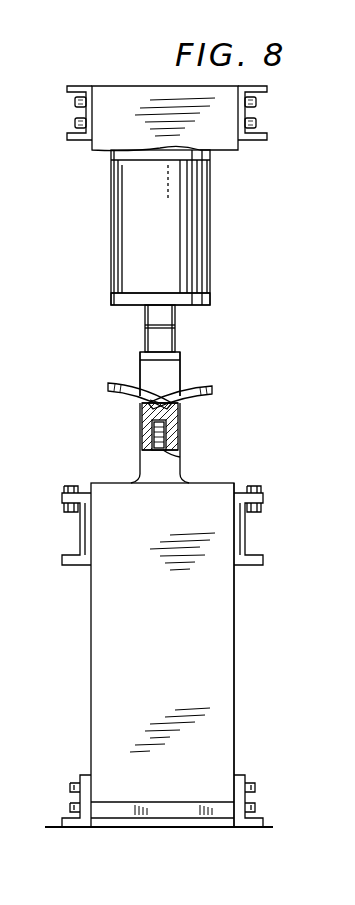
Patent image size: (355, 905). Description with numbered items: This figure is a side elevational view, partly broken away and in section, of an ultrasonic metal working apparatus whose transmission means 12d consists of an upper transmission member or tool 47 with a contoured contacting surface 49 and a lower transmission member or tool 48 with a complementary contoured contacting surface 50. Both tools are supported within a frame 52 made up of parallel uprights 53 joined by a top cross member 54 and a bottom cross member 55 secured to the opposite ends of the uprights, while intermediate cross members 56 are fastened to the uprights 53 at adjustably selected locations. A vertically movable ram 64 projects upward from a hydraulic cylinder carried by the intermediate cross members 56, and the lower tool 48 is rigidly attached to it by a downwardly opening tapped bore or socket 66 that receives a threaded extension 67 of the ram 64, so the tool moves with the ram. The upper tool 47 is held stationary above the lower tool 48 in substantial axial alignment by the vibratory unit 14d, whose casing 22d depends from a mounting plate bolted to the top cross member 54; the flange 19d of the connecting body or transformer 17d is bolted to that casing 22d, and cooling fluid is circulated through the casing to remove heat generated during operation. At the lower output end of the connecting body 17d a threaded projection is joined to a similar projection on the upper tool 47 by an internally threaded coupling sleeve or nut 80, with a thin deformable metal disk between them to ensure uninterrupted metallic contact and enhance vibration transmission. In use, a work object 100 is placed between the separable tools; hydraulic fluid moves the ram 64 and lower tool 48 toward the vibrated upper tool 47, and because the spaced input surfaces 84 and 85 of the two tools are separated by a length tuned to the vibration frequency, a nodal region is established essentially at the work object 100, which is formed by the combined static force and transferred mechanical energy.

The transmission means 12d is at (120, 403).
The vibratory unit 14d is at (210, 250).
The connecting body 17d is at (176, 313).
The flange 19d is at (111, 300).
The casing 22d is at (204, 187).
The upper transmission member 47 is at (147, 360).
The lower transmission member 48 is at (140, 424).
The contoured contacting surface 49 is at (150, 397).
The complementary contoured contacting surface 50 is at (182, 405).
The frame 52 is at (237, 655).
The uprights 53 is at (133, 91).
The top cross member 54 is at (267, 139).
The bottom cross member 55 is at (79, 792).
The intermediate cross members 56 is at (80, 541).
The ram 64 is at (148, 470).
The tapped bore 66 is at (180, 420).
The threaded extension 67 is at (181, 457).
The coupling sleeve 80 is at (176, 339).
The input surface 84 is at (143, 352).
The input surface 85 is at (140, 450).
The work object 100 is at (214, 389).